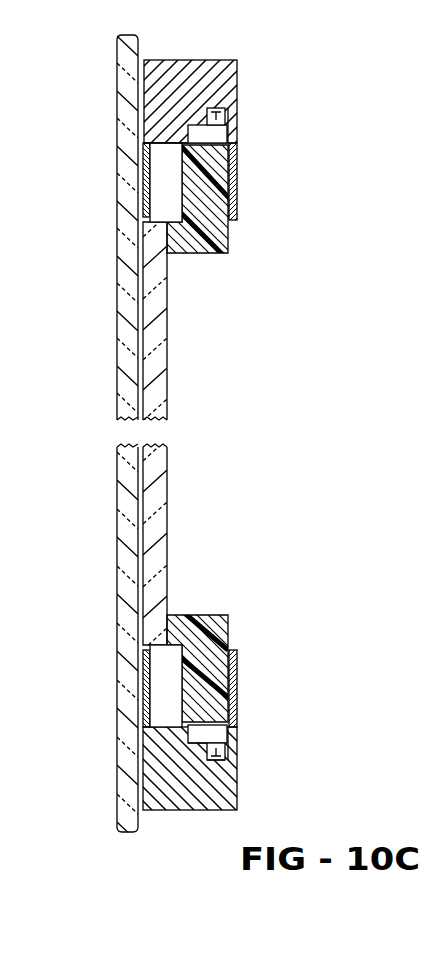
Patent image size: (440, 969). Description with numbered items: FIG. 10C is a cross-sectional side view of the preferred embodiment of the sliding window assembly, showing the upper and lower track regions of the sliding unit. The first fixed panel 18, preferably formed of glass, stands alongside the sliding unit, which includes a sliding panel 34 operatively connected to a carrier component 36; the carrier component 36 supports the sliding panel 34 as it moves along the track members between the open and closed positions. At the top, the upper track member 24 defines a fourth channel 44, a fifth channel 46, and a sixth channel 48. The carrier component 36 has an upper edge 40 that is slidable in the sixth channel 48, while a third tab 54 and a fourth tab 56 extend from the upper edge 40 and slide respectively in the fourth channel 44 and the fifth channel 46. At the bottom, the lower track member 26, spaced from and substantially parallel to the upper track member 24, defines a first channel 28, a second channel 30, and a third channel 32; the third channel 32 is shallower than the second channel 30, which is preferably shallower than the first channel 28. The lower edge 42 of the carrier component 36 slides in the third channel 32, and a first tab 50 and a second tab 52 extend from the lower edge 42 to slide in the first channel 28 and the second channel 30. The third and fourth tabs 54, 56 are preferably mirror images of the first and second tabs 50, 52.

The first fixed panel 18 is at (117, 302).
The upper track member 24 is at (240, 82).
The lower track member 26 is at (237, 800).
The first channel 28 is at (192, 752).
The second channel 30 is at (193, 745).
The third channel 32 is at (163, 692).
The sliding panel 34 is at (167, 348).
The carrier component 36 is at (228, 242).
The upper edge 40 is at (162, 148).
The lower edge 42 is at (147, 747).
The fourth channel 44 is at (218, 84).
The fifth channel 46 is at (170, 145).
The sixth channel 48 is at (143, 119).
The first tab 50 is at (222, 755).
The second tab 52 is at (222, 733).
The third tab 54 is at (226, 118).
The fourth tab 56 is at (220, 137).